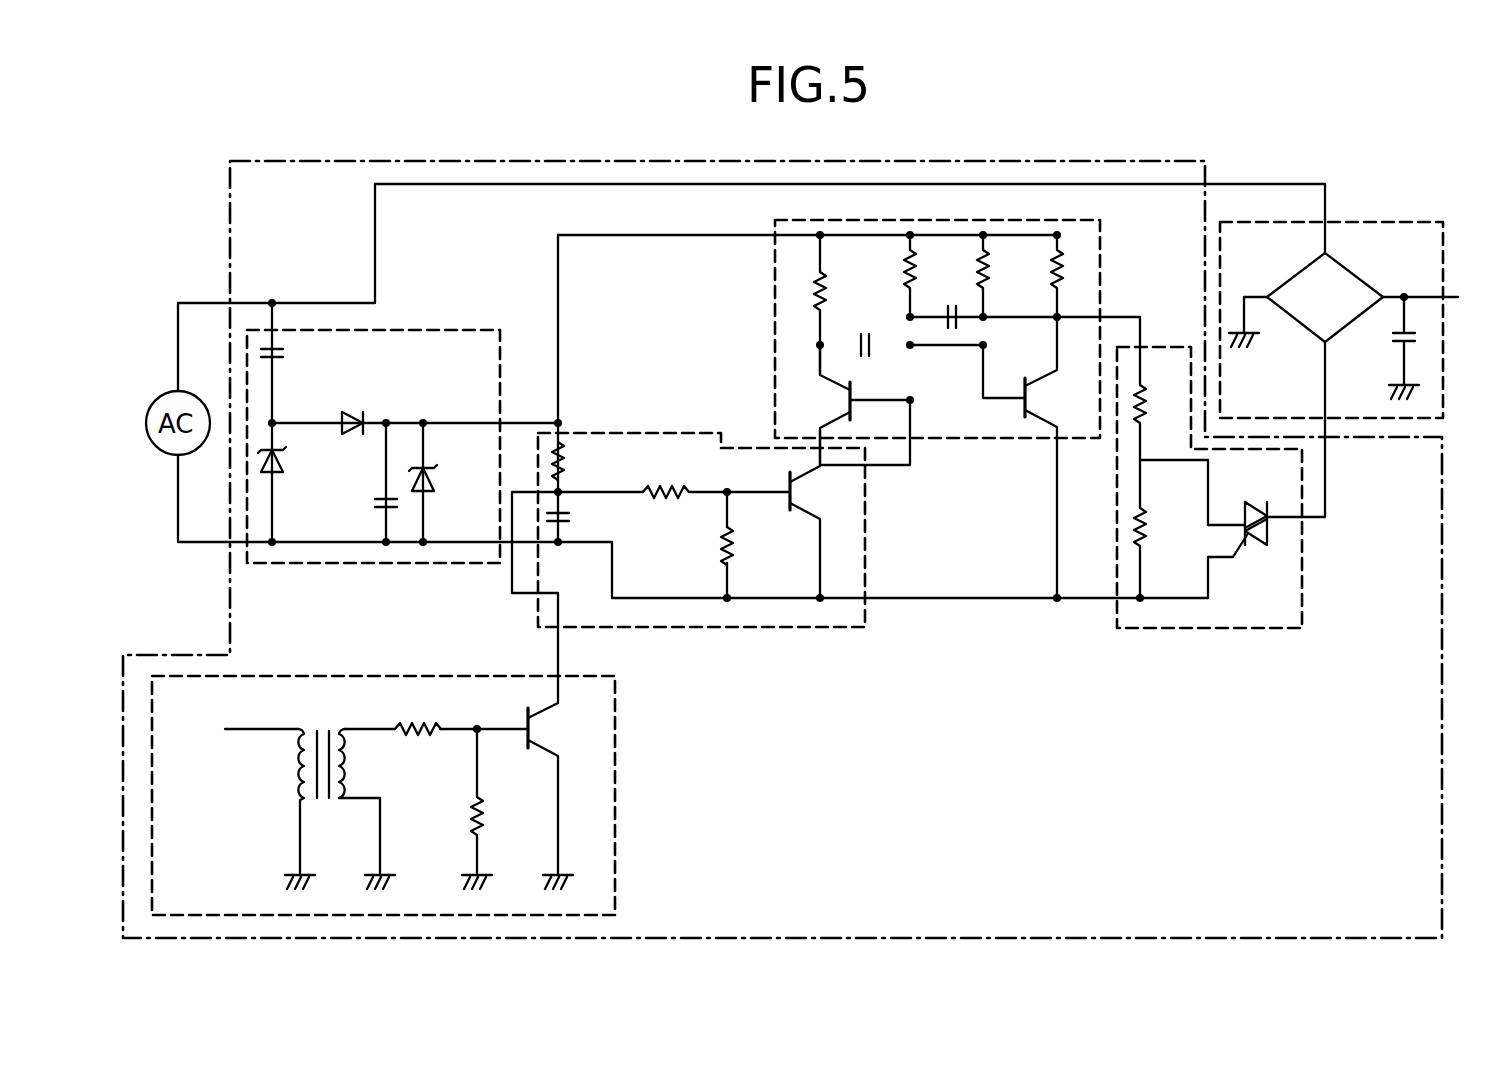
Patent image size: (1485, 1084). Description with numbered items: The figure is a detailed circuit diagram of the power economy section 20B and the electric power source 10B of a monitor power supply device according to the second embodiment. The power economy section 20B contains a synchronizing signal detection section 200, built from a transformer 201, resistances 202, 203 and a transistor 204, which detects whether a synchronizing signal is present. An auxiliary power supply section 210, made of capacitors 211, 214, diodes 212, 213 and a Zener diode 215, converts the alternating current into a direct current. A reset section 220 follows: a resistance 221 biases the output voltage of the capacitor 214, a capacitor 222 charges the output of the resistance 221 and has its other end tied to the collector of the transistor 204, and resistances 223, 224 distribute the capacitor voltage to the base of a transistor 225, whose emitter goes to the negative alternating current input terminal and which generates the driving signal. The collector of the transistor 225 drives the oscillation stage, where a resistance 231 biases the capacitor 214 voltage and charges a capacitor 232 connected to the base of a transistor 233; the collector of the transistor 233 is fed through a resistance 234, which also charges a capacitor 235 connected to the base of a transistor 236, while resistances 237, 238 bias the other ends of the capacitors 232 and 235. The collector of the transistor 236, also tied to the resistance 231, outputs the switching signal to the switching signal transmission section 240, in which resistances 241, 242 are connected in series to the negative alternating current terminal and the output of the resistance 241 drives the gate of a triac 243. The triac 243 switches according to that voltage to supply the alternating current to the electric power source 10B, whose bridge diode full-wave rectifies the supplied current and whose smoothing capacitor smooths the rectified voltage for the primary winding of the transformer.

The electric power source 10B is at (1350, 222).
The power economy section 20B is at (1000, 161).
The synchronizing signal detection section 200 is at (615, 778).
The transformer 201 is at (340, 790).
The resistance 202 is at (419, 711).
The resistance 203 is at (503, 809).
The transistor 204 is at (563, 796).
The auxiliary power supply section 210 is at (430, 328).
The capacitor 211 is at (303, 355).
The diode 212 is at (300, 463).
The diode 213 is at (351, 405).
The capacitor 214 is at (357, 505).
The Zener diode 215 is at (451, 482).
The reset section 220 is at (838, 628).
The resistance 221 is at (586, 461).
The capacitor 222 is at (586, 520).
The resistance 223 is at (671, 474).
The resistance 224 is at (758, 546).
The transistor 225 is at (850, 499).
The resistance 231 is at (1086, 276).
The capacitor 232 is at (952, 330).
The transistor 233 is at (849, 405).
The resistance 234 is at (849, 305).
The capacitor 235 is at (878, 360).
The transistor 236 is at (1059, 457).
The resistance 237 is at (939, 276).
The resistance 238 is at (1012, 276).
The switching signal transmission section 240 is at (1268, 628).
The resistance 241 is at (1169, 444).
The resistance 242 is at (1168, 552).
The triac 243 is at (1254, 508).